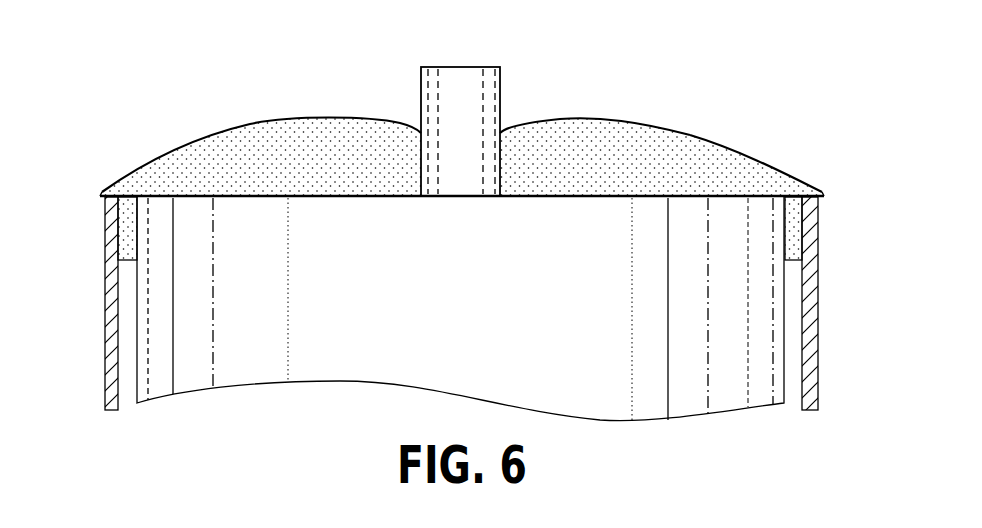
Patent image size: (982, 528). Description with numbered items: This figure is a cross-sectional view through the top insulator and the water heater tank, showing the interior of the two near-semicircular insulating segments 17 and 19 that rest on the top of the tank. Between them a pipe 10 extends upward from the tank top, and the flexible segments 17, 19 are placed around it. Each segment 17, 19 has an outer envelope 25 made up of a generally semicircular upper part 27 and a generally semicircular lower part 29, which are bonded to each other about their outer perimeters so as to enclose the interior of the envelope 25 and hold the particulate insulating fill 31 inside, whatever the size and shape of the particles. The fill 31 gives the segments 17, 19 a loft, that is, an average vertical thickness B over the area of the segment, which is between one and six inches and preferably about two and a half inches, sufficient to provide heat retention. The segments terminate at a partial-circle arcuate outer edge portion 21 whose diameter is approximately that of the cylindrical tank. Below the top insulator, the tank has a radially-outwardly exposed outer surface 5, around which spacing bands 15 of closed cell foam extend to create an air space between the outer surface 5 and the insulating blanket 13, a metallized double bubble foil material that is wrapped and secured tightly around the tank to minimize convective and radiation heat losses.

The outer surface 5 is at (452, 294).
The pipe 10 is at (490, 84).
The blanket 13 is at (110, 299).
The spacing bands 15 is at (122, 224).
The insulating segment 17 is at (243, 137).
The insulating segment 19 is at (658, 145).
The arcuate outer edge portion 21 is at (107, 182).
The outer envelope 25 is at (760, 156).
The upper part 27 is at (192, 140).
The lower part 29 is at (668, 199).
The particulate insulating fill 31 is at (368, 179).
The average vertical thickness B is at (317, 243).